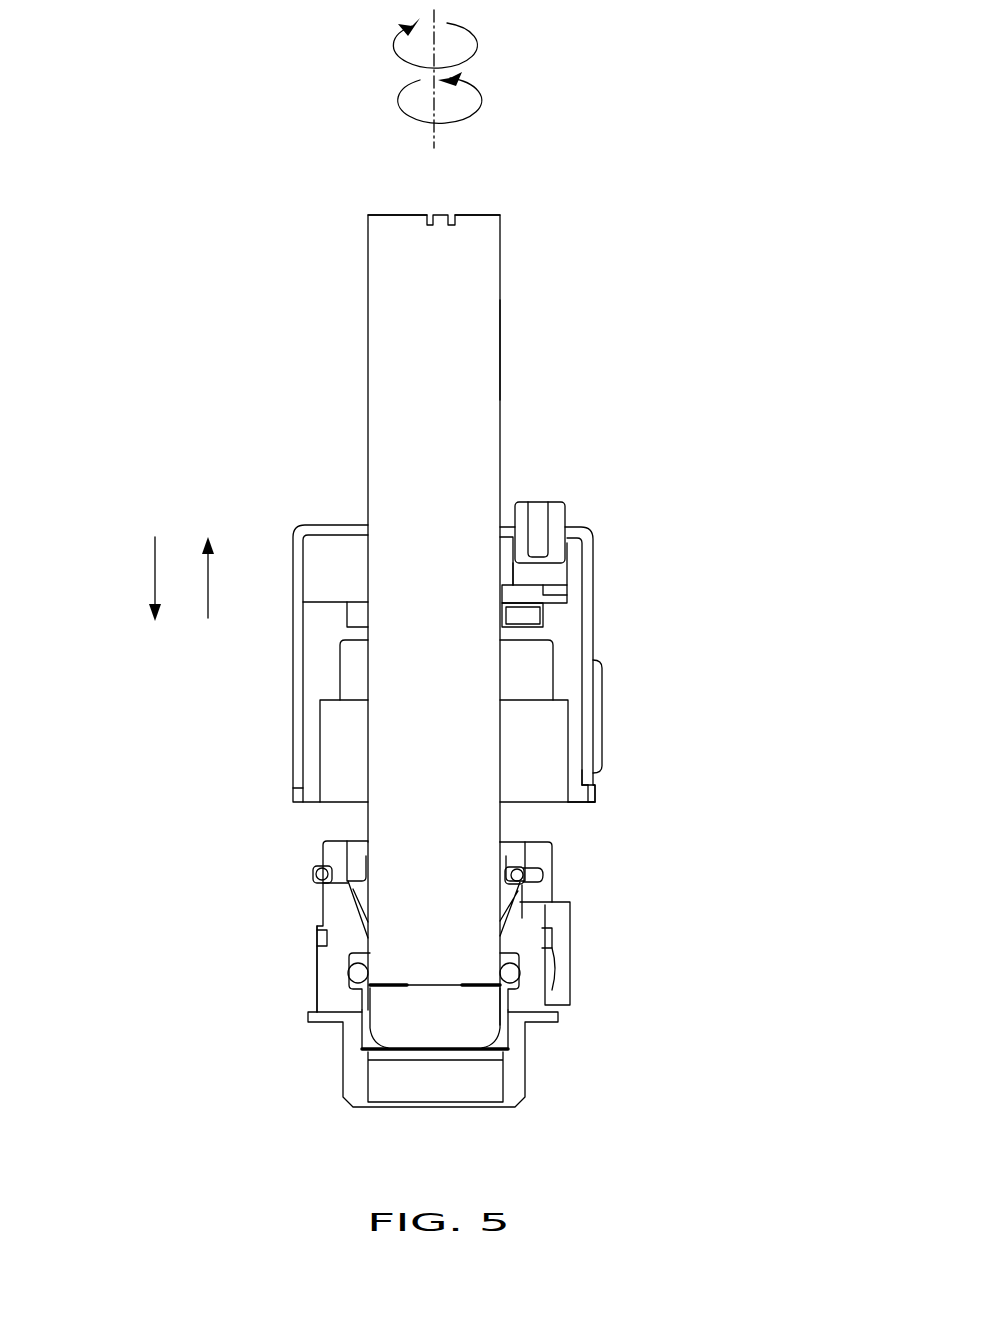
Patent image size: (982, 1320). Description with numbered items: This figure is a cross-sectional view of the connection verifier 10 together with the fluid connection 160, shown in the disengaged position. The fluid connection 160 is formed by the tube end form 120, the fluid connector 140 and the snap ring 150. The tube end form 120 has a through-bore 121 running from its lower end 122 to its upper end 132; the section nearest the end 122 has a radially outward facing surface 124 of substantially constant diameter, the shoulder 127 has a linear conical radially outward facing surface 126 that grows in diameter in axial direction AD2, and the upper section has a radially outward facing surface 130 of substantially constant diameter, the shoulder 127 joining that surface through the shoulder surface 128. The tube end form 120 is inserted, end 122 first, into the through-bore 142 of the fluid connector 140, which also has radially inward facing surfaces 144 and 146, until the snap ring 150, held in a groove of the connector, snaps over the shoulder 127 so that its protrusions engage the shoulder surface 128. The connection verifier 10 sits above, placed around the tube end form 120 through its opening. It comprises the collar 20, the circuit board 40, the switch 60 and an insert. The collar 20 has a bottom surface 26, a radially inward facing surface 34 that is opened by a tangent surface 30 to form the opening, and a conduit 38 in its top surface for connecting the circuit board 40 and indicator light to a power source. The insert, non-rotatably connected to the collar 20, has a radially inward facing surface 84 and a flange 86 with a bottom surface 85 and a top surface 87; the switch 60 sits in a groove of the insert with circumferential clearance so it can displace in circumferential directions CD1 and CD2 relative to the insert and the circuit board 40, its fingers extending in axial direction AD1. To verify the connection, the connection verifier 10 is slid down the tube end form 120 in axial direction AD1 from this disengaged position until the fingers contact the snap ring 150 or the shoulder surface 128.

The connection verifier 10 is at (435, 586).
The collar 20 is at (593, 682).
The bottom surface 26 is at (583, 782).
The surface 30 is at (335, 550).
The radially inward facing surface 34 is at (500, 547).
The conduit 38 is at (557, 518).
The circuit board 40 is at (553, 595).
The switch 60 is at (523, 617).
The radially inward facing surface 84 is at (558, 728).
The bottom surface 85 is at (590, 803).
The flange 86 is at (590, 793).
The top surface 87 is at (585, 783).
The tube end form 120 is at (492, 265).
The through-bore 121 is at (408, 198).
The end 122 is at (400, 1057).
The radially outward facing surface 124 is at (502, 1025).
The radially outward facing surface 126 is at (350, 910).
The shoulder 127 is at (343, 917).
The shoulder surface 128 is at (325, 858).
The radially outward facing surface 130 is at (500, 340).
The end 132 is at (483, 215).
The fluid connector 140 is at (523, 1082).
The through-bore 142 is at (457, 1093).
The radially inward facing surface 144 is at (520, 905).
The radially inward facing surface 146 is at (517, 920).
The snap ring 150 is at (533, 875).
The fluid connection 160 is at (186, 1035).
The circumferential direction CD1 is at (475, 43).
The circumferential direction CD2 is at (475, 100).
The axial direction AD1 is at (152, 573).
The axial direction AD2 is at (210, 585).